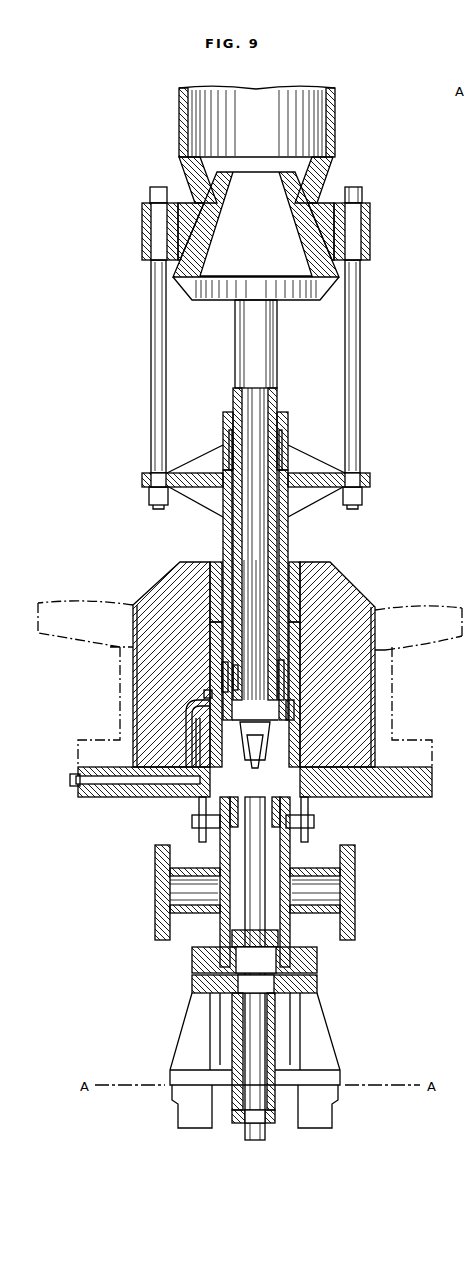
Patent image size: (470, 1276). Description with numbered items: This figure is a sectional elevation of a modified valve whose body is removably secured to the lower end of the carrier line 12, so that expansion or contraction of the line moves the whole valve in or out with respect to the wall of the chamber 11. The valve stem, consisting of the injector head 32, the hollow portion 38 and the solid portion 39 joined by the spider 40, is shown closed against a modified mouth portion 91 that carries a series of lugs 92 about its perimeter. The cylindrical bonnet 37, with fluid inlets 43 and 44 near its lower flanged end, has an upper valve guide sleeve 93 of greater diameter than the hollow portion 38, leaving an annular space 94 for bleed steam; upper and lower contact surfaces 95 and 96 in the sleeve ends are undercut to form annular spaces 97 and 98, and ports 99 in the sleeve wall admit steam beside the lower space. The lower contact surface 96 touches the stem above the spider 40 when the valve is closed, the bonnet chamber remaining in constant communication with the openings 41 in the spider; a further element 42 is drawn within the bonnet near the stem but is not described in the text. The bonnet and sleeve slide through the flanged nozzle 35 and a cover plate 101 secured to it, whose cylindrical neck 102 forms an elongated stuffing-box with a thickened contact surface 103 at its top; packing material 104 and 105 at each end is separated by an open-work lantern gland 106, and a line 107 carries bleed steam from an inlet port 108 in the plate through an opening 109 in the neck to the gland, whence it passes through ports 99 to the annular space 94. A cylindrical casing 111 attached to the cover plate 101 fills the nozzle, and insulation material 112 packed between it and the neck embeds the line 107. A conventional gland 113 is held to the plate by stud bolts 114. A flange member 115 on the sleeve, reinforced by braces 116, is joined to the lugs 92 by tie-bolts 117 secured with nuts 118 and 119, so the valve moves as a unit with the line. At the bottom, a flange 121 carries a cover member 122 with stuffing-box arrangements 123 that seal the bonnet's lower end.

The carrier line 12 is at (180, 110).
The mouth portion 91 is at (186, 176).
The injector head 32 is at (286, 290).
The lugs 92 is at (145, 219).
The nuts 119 is at (358, 194).
The tie-bolts 117 is at (152, 333).
The flange member 115 is at (169, 487).
The nuts 118 is at (151, 497).
The braces or webs 116 is at (305, 496).
The hollow portion 38 is at (248, 338).
The upper contact surface 95 is at (236, 445).
The annular space 97 is at (229, 444).
The valve guide sleeve 93 is at (224, 545).
The annular space 94 is at (289, 540).
The insulation material 112 is at (148, 600).
The cylindrical casing 111 is at (373, 616).
The cylindrical neck 102 is at (220, 610).
The packing material 104 is at (216, 625).
The contact surface 103 is at (233, 570).
The chamber 11 is at (64, 632).
The flanged nozzle 35 is at (120, 718).
The annular space 98 is at (222, 672).
The ports 99 is at (238, 690).
The lower contact surface 96 is at (278, 688).
The opening 109 is at (206, 693).
The line 107 is at (188, 722).
The packing material 105 is at (200, 762).
The lantern gland 106 is at (290, 718).
The spider 40 is at (272, 745).
The openings 41 is at (256, 766).
The cover plate 101 is at (406, 796).
The inlet port 108 is at (106, 790).
The cylindrical bonnet 37 is at (276, 855).
The bushing 42 is at (240, 818).
The stud bolts 114 is at (203, 808).
The gland 113 is at (317, 827).
The fluid inlet 43 is at (166, 926).
The fluid inlet 44 is at (352, 922).
The solid portion 39 is at (256, 915).
The flange 121 is at (195, 966).
The cover member 122 is at (184, 1026).
The stuffing-box arrangements 123 is at (283, 1030).